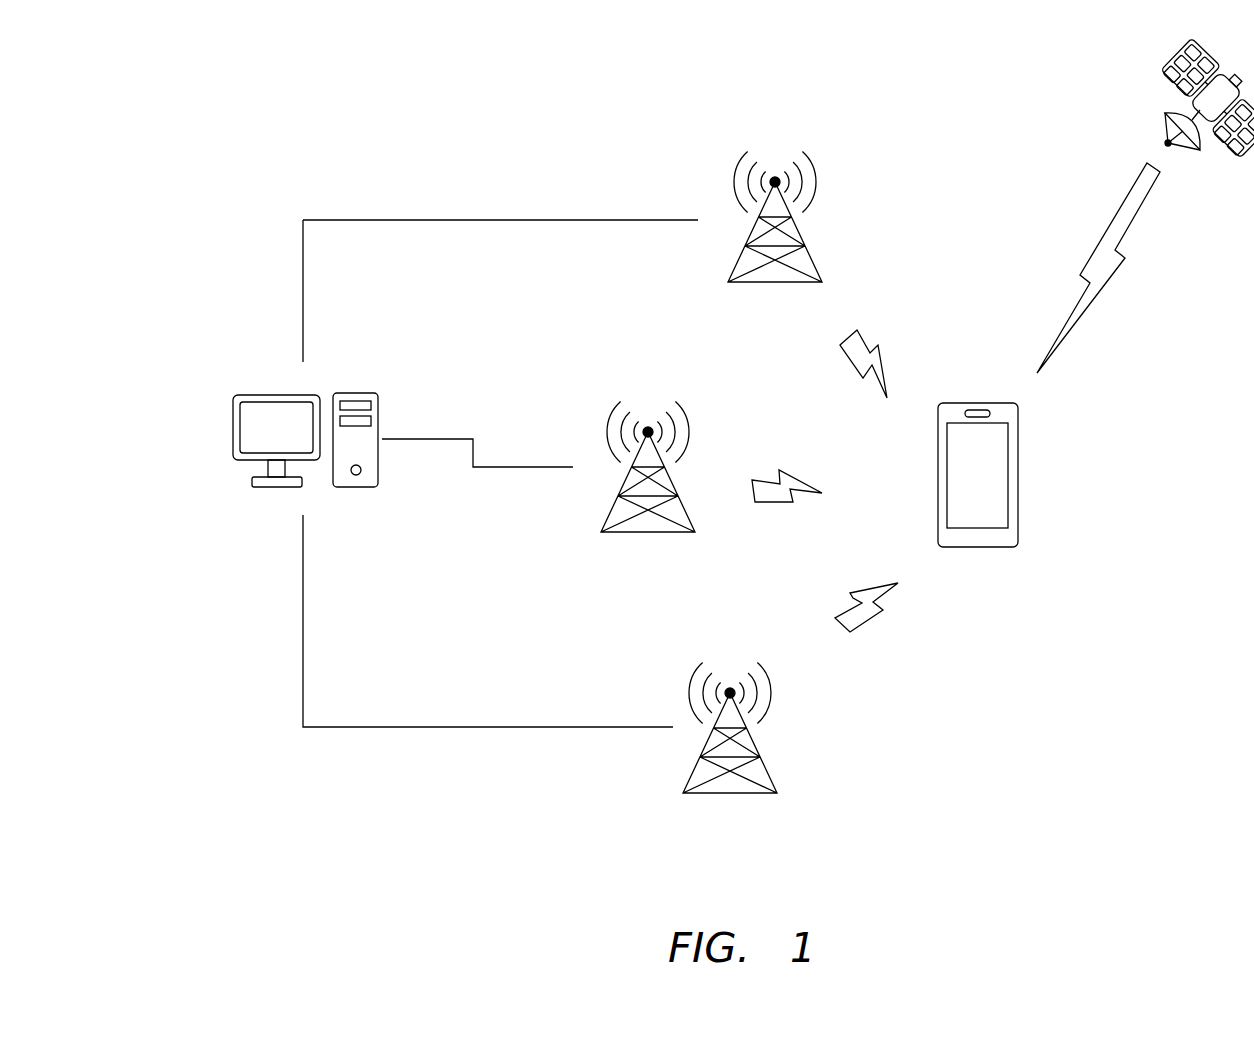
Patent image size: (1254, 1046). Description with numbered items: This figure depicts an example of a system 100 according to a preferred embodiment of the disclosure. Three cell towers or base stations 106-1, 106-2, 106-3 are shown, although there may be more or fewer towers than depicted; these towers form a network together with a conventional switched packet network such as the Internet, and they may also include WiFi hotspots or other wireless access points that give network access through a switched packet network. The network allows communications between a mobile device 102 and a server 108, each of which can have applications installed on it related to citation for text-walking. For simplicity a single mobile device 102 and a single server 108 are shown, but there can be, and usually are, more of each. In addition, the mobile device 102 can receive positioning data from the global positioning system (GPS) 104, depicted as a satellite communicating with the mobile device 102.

The system 100 is at (246, 134).
The mobile device 102 is at (978, 522).
The global positioning system (GPS) 104 is at (1204, 144).
The cell tower or base station 106-1 is at (775, 252).
The cell tower or base station 106-2 is at (648, 503).
The cell tower or base station 106-3 is at (730, 763).
The server 108 is at (256, 440).